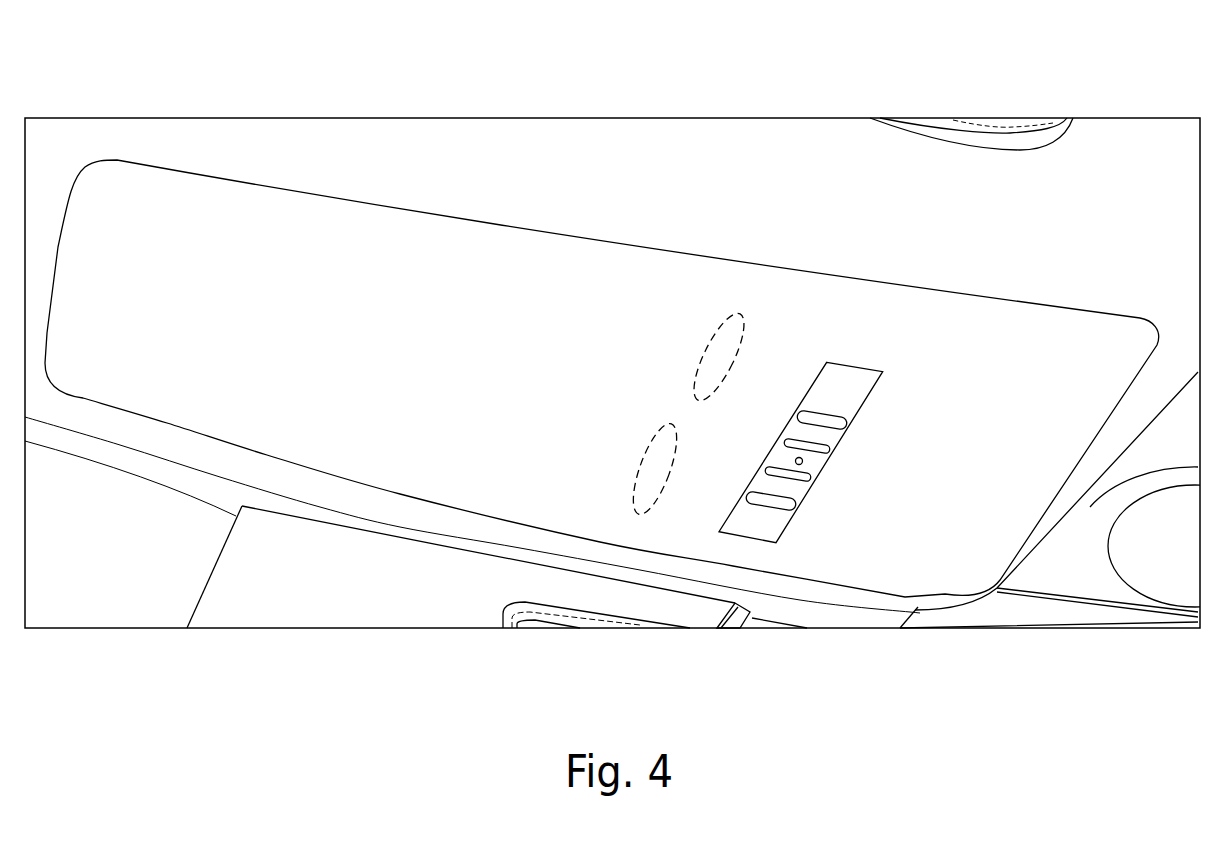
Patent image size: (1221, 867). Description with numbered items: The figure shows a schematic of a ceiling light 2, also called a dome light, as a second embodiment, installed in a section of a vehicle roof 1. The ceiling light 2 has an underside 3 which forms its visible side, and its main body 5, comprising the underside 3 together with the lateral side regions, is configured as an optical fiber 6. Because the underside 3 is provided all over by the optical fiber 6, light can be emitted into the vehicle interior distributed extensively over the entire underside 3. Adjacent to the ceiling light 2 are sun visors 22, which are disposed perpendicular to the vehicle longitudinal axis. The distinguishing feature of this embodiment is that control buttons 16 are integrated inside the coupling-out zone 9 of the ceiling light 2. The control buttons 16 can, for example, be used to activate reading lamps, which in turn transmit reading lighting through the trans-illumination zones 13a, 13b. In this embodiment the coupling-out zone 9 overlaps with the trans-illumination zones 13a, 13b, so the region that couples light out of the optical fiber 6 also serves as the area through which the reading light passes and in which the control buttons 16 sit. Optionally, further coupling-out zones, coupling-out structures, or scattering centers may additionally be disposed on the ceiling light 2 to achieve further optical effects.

The vehicle roof 1 is at (815, 147).
The ceiling light 2 is at (430, 233).
The main body 5 is at (602, 378).
The underside 3 is at (446, 389).
The optical fiber 6 is at (602, 378).
The coupling-out zone 9 is at (974, 471).
The trans-illumination zone 13a is at (730, 310).
The trans-illumination zone 13b is at (647, 490).
The control buttons 16 is at (848, 386).
The sun visors 22 is at (658, 605).